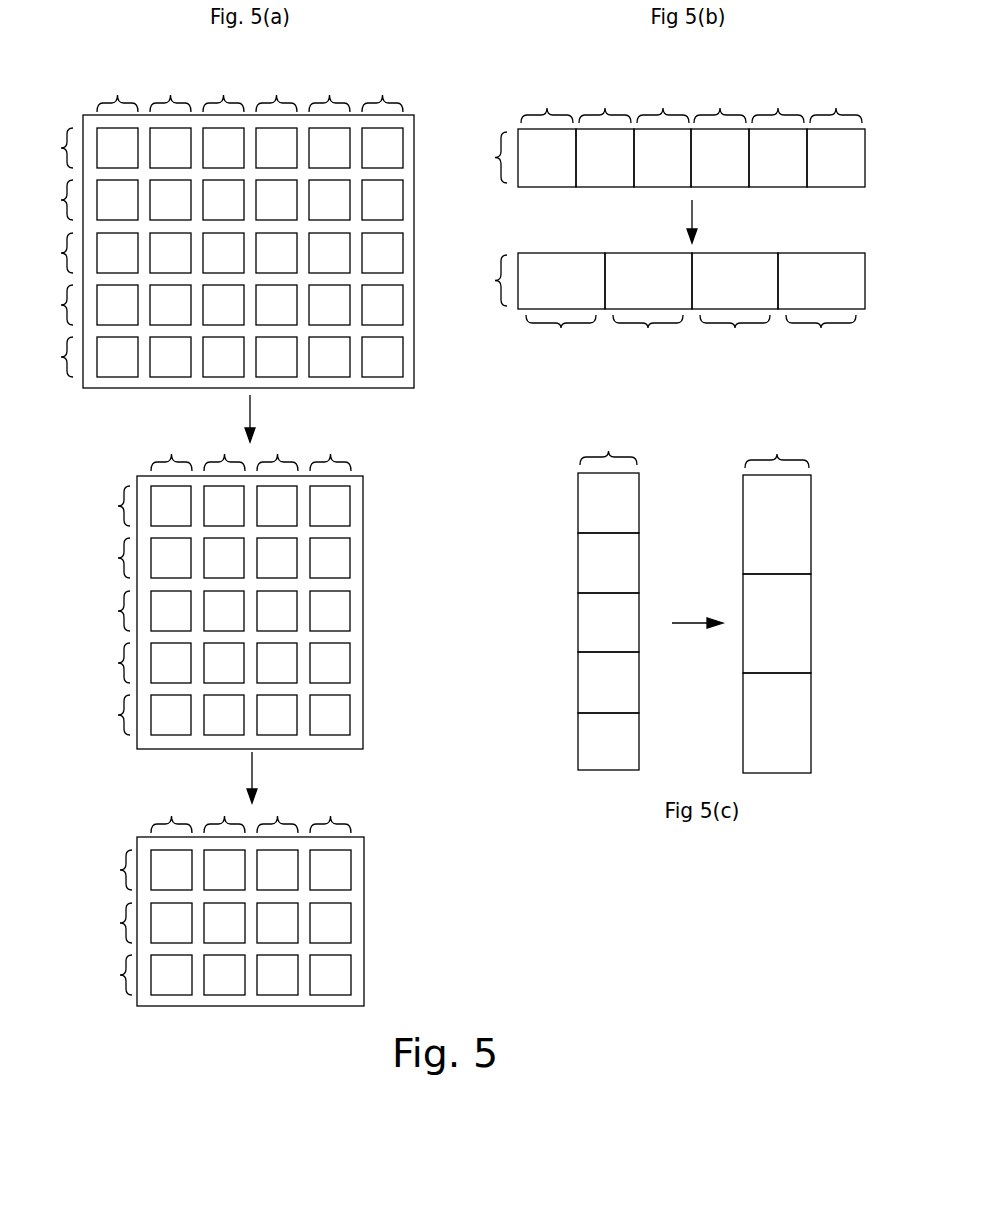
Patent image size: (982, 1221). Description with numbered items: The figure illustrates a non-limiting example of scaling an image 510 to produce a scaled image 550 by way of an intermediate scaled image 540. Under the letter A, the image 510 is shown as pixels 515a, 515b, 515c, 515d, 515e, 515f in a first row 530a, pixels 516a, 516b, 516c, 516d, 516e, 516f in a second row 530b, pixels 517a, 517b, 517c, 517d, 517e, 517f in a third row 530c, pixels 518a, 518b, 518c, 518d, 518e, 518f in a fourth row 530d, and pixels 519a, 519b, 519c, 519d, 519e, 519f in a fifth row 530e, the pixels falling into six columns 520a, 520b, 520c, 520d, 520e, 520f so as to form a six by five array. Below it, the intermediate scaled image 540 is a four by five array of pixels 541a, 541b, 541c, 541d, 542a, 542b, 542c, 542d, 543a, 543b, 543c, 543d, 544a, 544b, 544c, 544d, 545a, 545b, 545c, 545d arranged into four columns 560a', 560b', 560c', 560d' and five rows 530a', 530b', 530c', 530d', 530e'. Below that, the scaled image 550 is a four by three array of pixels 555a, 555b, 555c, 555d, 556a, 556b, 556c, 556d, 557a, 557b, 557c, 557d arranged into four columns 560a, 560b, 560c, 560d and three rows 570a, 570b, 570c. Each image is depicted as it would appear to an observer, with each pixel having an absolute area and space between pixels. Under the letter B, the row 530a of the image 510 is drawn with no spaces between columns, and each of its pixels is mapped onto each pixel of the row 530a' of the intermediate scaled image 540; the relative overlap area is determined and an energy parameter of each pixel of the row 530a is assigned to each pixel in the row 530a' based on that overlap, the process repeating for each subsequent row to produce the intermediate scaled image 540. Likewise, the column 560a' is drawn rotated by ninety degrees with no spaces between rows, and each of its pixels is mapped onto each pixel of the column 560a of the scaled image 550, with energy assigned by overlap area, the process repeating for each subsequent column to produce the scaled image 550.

In FIG. 5A, the image 510 is at (83, 113).
In FIG. 5A, the intermediate scaled image 540 is at (137, 476).
In FIG. 5A, the scaled image 550 is at (137, 837).
In FIG. 5A, the column 520a is at (117, 93).
In FIG. 5B, the column 520a is at (547, 105).
In FIG. 5A, the column 520b is at (170, 93).
In FIG. 5B, the column 520b is at (605, 105).
In FIG. 5A, the column 520c is at (223, 93).
In FIG. 5B, the column 520c is at (663, 105).
In FIG. 5A, the column 520d is at (276, 93).
In FIG. 5B, the column 520d is at (720, 105).
In FIG. 5A, the column 520e is at (329, 93).
In FIG. 5B, the column 520e is at (778, 105).
In FIG. 5A, the column 520f is at (382, 93).
In FIG. 5B, the column 520f is at (836, 105).
In FIG. 5A, the row 530a is at (48, 148).
In FIG. 5B, the row 530a is at (479, 157).
In FIG. 5A, the row 530b is at (48, 200).
In FIG. 5A, the row 530c is at (48, 253).
In FIG. 5A, the row 530d is at (48, 305).
In FIG. 5A, the row 530e is at (48, 357).
In FIG. 5A, the row 530a' is at (103, 506).
In FIG. 5B, the row 530a' is at (478, 280).
In FIG. 5A, the row 530b' is at (103, 558).
In FIG. 5A, the row 530c' is at (103, 611).
In FIG. 5A, the row 530d' is at (103, 663).
In FIG. 5A, the row 530e' is at (103, 715).
In FIG. 5A, the column 560a' is at (171, 453).
In FIG. 5B, the column 560a' is at (561, 333).
In FIG. 5C, the column 560a' is at (608, 447).
In FIG. 5A, the column 560b' is at (224, 453).
In FIG. 5B, the column 560b' is at (648, 333).
In FIG. 5A, the column 560c' is at (277, 453).
In FIG. 5B, the column 560c' is at (735, 333).
In FIG. 5A, the column 560d' is at (330, 453).
In FIG. 5B, the column 560d' is at (821, 333).
In FIG. 5A, the column 560a is at (171, 815).
In FIG. 5C, the column 560a is at (777, 450).
In FIG. 5A, the column 560b is at (224, 815).
In FIG. 5A, the column 560c is at (277, 815).
In FIG. 5A, the column 560d is at (330, 815).
In FIG. 5A, the row 570a is at (105, 870).
In FIG. 5A, the row 570b is at (104, 923).
In FIG. 5A, the row 570c is at (105, 975).
In FIG. 5A, the pixel 515a is at (117, 148).
In FIG. 5B, the pixel 515a is at (547, 158).
In FIG. 5A, the pixel 515b is at (170, 148).
In FIG. 5B, the pixel 515b is at (605, 158).
In FIG. 5A, the pixel 515c is at (223, 148).
In FIG. 5B, the pixel 515c is at (662, 158).
In FIG. 5A, the pixel 515d is at (276, 148).
In FIG. 5B, the pixel 515d is at (720, 158).
In FIG. 5A, the pixel 515e is at (329, 148).
In FIG. 5B, the pixel 515e is at (778, 158).
In FIG. 5A, the pixel 515f is at (382, 148).
In FIG. 5B, the pixel 515f is at (836, 158).
In FIG. 5A, the pixel 516a is at (117, 200).
In FIG. 5A, the pixel 516b is at (170, 200).
In FIG. 5A, the pixel 516c is at (223, 200).
In FIG. 5A, the pixel 516d is at (276, 200).
In FIG. 5A, the pixel 516e is at (329, 200).
In FIG. 5A, the pixel 516f is at (382, 200).
In FIG. 5A, the pixel 517a is at (117, 253).
In FIG. 5A, the pixel 517b is at (170, 253).
In FIG. 5A, the pixel 517c is at (223, 253).
In FIG. 5A, the pixel 517d is at (276, 253).
In FIG. 5A, the pixel 517e is at (329, 253).
In FIG. 5A, the pixel 517f is at (382, 253).
In FIG. 5A, the pixel 518a is at (117, 305).
In FIG. 5A, the pixel 518b is at (170, 305).
In FIG. 5A, the pixel 518c is at (223, 305).
In FIG. 5A, the pixel 518d is at (276, 305).
In FIG. 5A, the pixel 518e is at (329, 305).
In FIG. 5A, the pixel 518f is at (382, 305).
In FIG. 5A, the pixel 519a is at (117, 357).
In FIG. 5A, the pixel 519b is at (170, 357).
In FIG. 5A, the pixel 519c is at (223, 357).
In FIG. 5A, the pixel 519d is at (276, 357).
In FIG. 5A, the pixel 519e is at (329, 357).
In FIG. 5A, the pixel 519f is at (382, 357).
In FIG. 5A, the pixel 541a is at (171, 506).
In FIG. 5B, the pixel 541a is at (561, 281).
In FIG. 5C, the pixel 541a is at (608, 503).
In FIG. 5A, the pixel 541b is at (224, 506).
In FIG. 5B, the pixel 541b is at (648, 281).
In FIG. 5A, the pixel 541c is at (277, 506).
In FIG. 5B, the pixel 541c is at (735, 281).
In FIG. 5A, the pixel 541d is at (330, 506).
In FIG. 5B, the pixel 541d is at (821, 281).
In FIG. 5A, the pixel 542a is at (171, 558).
In FIG. 5C, the pixel 542a is at (608, 563).
In FIG. 5A, the pixel 542b is at (224, 558).
In FIG. 5A, the pixel 542c is at (277, 558).
In FIG. 5A, the pixel 542d is at (330, 558).
In FIG. 5A, the pixel 543a is at (171, 611).
In FIG. 5C, the pixel 543a is at (608, 622).
In FIG. 5A, the pixel 543b is at (224, 611).
In FIG. 5A, the pixel 543c is at (277, 611).
In FIG. 5A, the pixel 543d is at (330, 611).
In FIG. 5A, the pixel 544a is at (171, 663).
In FIG. 5C, the pixel 544a is at (608, 682).
In FIG. 5A, the pixel 544b is at (224, 663).
In FIG. 5A, the pixel 544c is at (277, 663).
In FIG. 5A, the pixel 544d is at (330, 663).
In FIG. 5A, the pixel 545a is at (171, 715).
In FIG. 5C, the pixel 545a is at (608, 741).
In FIG. 5A, the pixel 545b is at (224, 715).
In FIG. 5A, the pixel 545c is at (277, 715).
In FIG. 5A, the pixel 545d is at (330, 715).
In FIG. 5A, the pixel 555a is at (171, 870).
In FIG. 5C, the pixel 555a is at (777, 524).
In FIG. 5A, the pixel 555b is at (224, 870).
In FIG. 5A, the pixel 555c is at (277, 870).
In FIG. 5A, the pixel 555d is at (330, 870).
In FIG. 5A, the pixel 556a is at (171, 923).
In FIG. 5C, the pixel 556a is at (777, 623).
In FIG. 5A, the pixel 556b is at (224, 923).
In FIG. 5A, the pixel 556c is at (277, 923).
In FIG. 5A, the pixel 556d is at (330, 923).
In FIG. 5A, the pixel 557a is at (171, 975).
In FIG. 5C, the pixel 557a is at (777, 723).
In FIG. 5A, the pixel 557b is at (224, 975).
In FIG. 5A, the pixel 557c is at (277, 975).
In FIG. 5A, the pixel 557d is at (330, 975).